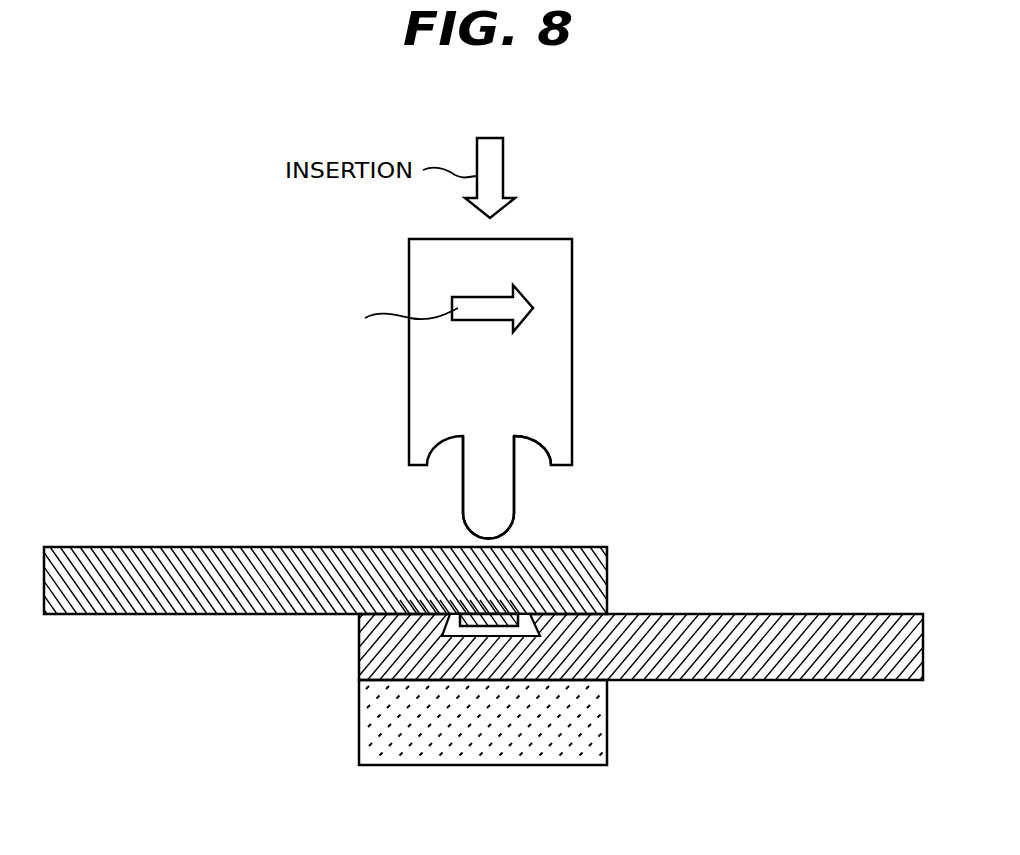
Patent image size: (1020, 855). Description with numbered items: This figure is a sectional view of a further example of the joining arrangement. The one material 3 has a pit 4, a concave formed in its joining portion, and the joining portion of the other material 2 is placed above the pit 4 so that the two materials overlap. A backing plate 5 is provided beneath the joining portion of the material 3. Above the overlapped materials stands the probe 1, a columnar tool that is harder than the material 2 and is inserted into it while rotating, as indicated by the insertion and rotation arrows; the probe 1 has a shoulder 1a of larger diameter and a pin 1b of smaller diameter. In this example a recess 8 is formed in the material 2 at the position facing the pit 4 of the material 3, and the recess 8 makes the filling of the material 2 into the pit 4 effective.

The probe 1 is at (535, 350).
The shoulder 1a is at (557, 447).
The pin 1b is at (505, 498).
The material 2 is at (112, 555).
The material 3 is at (805, 664).
The pit 4 is at (448, 628).
The backing plate 5 is at (549, 735).
The recess 8 is at (497, 620).